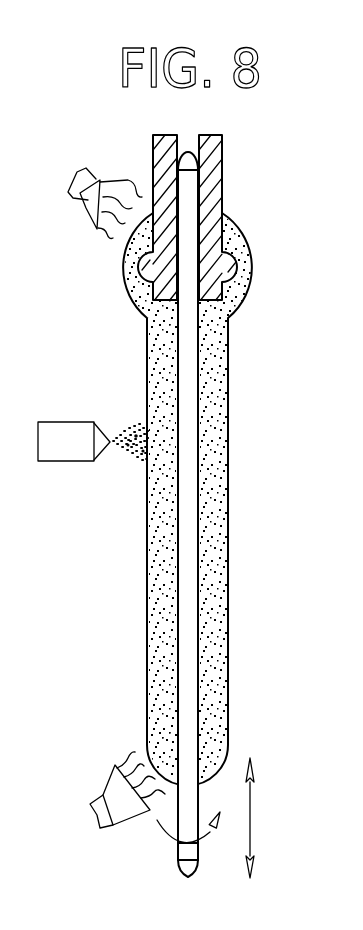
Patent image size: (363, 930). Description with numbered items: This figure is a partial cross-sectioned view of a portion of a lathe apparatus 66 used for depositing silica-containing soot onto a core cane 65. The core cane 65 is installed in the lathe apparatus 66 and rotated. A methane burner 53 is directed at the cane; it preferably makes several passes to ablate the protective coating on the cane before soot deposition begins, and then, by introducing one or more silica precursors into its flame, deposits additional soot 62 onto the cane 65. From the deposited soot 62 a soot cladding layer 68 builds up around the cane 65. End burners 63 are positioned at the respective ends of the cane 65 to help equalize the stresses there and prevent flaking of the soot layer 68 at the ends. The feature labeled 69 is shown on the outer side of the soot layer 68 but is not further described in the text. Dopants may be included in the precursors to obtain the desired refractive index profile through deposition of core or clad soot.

The burner 53 is at (73, 422).
The soot 62 is at (130, 448).
The end burners 63 is at (73, 198).
The core cane 65 is at (190, 598).
The lathe apparatus 66 is at (245, 458).
The soot cladding layer 68 is at (152, 554).
The outer surface of tube 69 is at (229, 607).